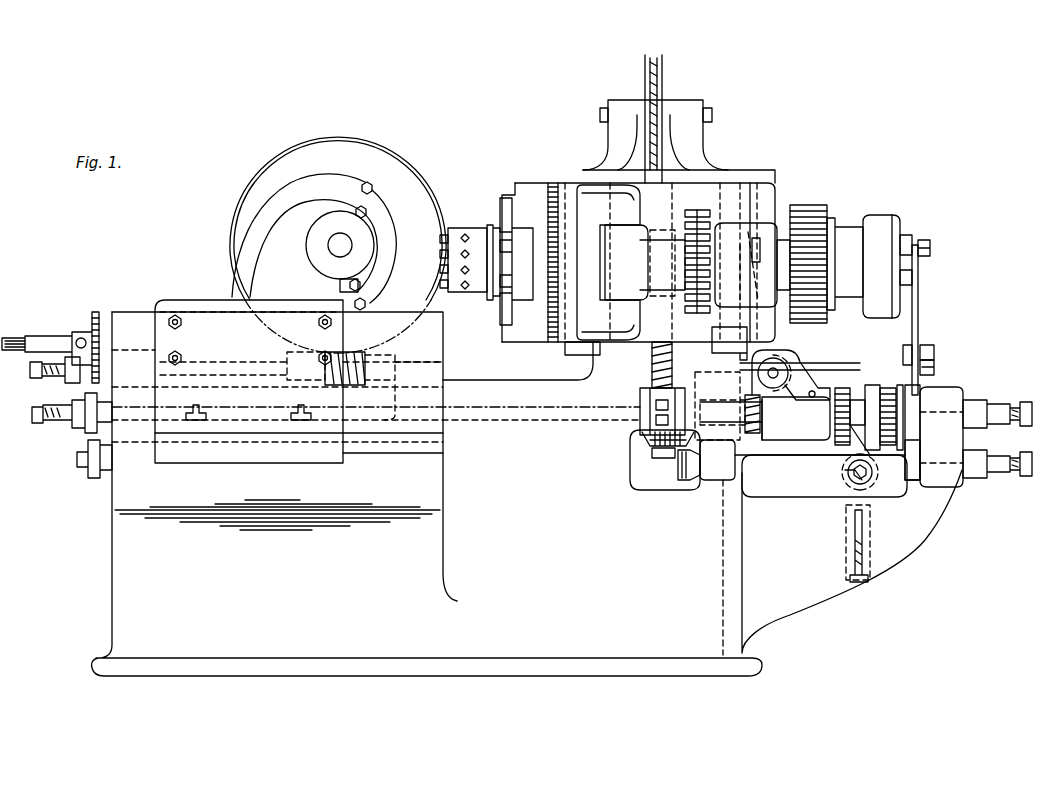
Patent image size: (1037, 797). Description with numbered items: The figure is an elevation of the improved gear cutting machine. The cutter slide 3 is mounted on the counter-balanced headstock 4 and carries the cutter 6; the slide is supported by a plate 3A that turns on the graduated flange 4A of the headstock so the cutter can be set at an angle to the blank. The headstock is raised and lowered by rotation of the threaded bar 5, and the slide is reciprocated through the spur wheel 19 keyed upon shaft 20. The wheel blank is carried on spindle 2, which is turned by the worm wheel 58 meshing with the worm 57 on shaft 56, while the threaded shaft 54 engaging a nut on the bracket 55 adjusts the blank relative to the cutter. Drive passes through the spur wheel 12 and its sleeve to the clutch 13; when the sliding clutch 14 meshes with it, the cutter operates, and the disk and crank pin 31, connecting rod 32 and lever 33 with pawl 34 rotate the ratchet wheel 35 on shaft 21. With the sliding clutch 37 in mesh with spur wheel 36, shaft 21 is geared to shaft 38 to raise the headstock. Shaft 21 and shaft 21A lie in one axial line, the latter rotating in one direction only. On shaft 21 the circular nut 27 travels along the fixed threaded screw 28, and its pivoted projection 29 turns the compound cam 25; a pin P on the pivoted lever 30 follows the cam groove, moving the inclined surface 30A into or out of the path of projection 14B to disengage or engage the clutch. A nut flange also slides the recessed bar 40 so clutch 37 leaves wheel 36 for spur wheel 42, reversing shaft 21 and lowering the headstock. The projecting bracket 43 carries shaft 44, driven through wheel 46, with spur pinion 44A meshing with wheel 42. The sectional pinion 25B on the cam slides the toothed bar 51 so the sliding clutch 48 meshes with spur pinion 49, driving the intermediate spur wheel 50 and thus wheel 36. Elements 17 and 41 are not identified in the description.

The spindle 2 is at (338, 240).
The cutter slide 3 is at (510, 261).
The plate 3A is at (525, 184).
The headstock 4 is at (638, 256).
The graduated flange 4A is at (553, 183).
The threaded bar 5 is at (652, 355).
The cutter 6 is at (440, 250).
The spur wheel 12 is at (702, 212).
The clutch 13 is at (752, 245).
The sliding clutch 14 is at (765, 245).
The projection of clutch 14B is at (785, 240).
The flywheel cup 17 is at (895, 225).
The spur wheel 19 is at (818, 222).
The shaft 20 is at (845, 262).
The shaft 21 is at (1000, 404).
The shaft 21A is at (66, 420).
The compound cam 25 is at (788, 378).
The sectional pinion 25B is at (793, 369).
The circular nut 27 is at (765, 418).
The fixed threaded screw 28 is at (717, 460).
The projection 29 is at (824, 476).
The pivoted lever 30 is at (712, 355).
The inclined surface 30A is at (765, 300).
The disk and crank pin 31 is at (930, 248).
The connecting rod 32 is at (918, 298).
The lever 33 is at (934, 352).
The pawl 34 is at (934, 368).
The ratchet wheel 35 is at (900, 385).
The spur wheel 36 is at (905, 357).
The sliding clutch 37 is at (870, 475).
The shaft 38 is at (812, 475).
The recessed bar 40 is at (725, 400).
The link 41 is at (848, 482).
The spur wheel 42 is at (842, 446).
The projecting bracket 43 is at (872, 492).
The shaft 44 is at (638, 426).
The spur pinion 44A is at (825, 440).
The wheel 46 is at (650, 395).
The sliding clutch 48 is at (876, 388).
The spur pinion 49 is at (945, 412).
The intermediate spur wheel 50 is at (910, 470).
The toothed bar 51 is at (800, 360).
The threaded shaft 54 is at (52, 342).
The bracket 55 is at (249, 369).
The shaft 56 is at (60, 380).
The worm 57 is at (322, 386).
The worm wheel 58 is at (232, 240).
The pin P is at (745, 372).